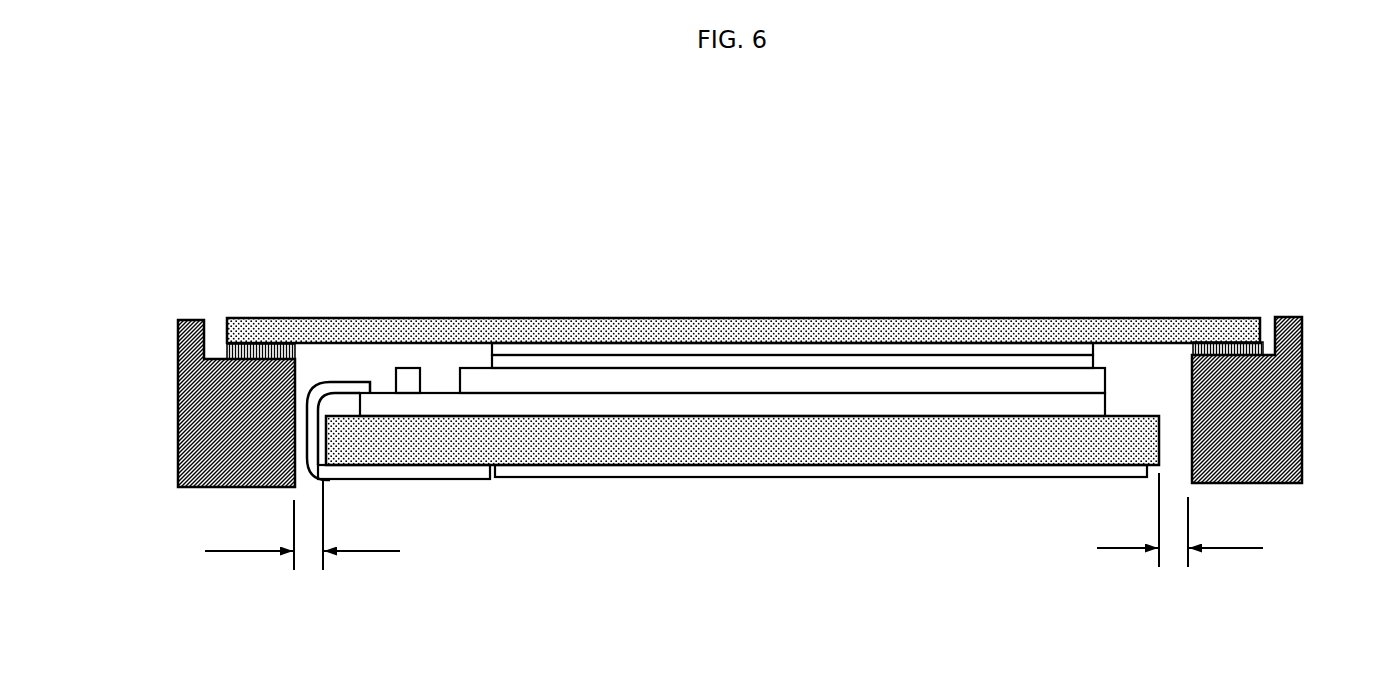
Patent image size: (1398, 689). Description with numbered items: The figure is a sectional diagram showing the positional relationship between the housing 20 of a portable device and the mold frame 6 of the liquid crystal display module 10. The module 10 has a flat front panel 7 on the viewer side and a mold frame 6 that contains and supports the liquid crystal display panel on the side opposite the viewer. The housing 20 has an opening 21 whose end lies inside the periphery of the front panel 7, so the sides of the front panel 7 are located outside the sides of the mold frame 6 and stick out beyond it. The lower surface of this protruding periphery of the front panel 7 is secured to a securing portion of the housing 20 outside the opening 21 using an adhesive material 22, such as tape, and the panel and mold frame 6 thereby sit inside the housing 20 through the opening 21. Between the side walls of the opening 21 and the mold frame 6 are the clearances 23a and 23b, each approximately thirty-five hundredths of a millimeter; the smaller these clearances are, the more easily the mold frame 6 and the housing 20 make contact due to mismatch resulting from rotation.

The mold frame 6 is at (520, 438).
The front panel 7 is at (513, 327).
The liquid crystal display module 10 is at (743, 389).
The housing 20 is at (183, 382).
The opening 21 is at (1182, 385).
The adhesive material 22 is at (278, 345).
The clearance 23a is at (302, 544).
The clearance 23b is at (1180, 539).